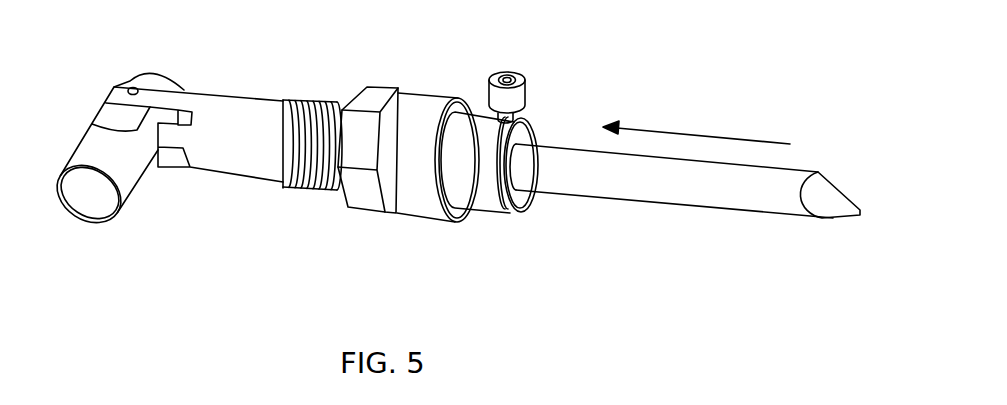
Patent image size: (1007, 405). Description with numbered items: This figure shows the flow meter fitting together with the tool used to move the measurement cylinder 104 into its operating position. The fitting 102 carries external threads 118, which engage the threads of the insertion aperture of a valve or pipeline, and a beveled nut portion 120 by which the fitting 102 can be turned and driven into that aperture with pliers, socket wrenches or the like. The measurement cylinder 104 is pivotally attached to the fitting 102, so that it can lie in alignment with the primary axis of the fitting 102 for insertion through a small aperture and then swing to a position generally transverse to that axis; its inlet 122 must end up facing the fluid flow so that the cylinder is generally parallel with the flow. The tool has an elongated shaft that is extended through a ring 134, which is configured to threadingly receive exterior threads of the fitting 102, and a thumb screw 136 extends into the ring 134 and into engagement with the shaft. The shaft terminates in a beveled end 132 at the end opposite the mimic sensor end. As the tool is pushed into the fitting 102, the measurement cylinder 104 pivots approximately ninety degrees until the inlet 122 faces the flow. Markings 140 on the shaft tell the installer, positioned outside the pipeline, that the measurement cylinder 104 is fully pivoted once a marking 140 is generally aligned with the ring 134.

The fitting 102 is at (225, 162).
The measurement cylinder 104 is at (93, 148).
The threads 118 is at (313, 120).
The beveled nut portion 120 is at (378, 96).
The inlet 122 is at (93, 203).
The beveled end 132 is at (828, 190).
The ring 134 is at (473, 220).
The thumb screw 136 is at (509, 78).
The markings 140 is at (525, 187).